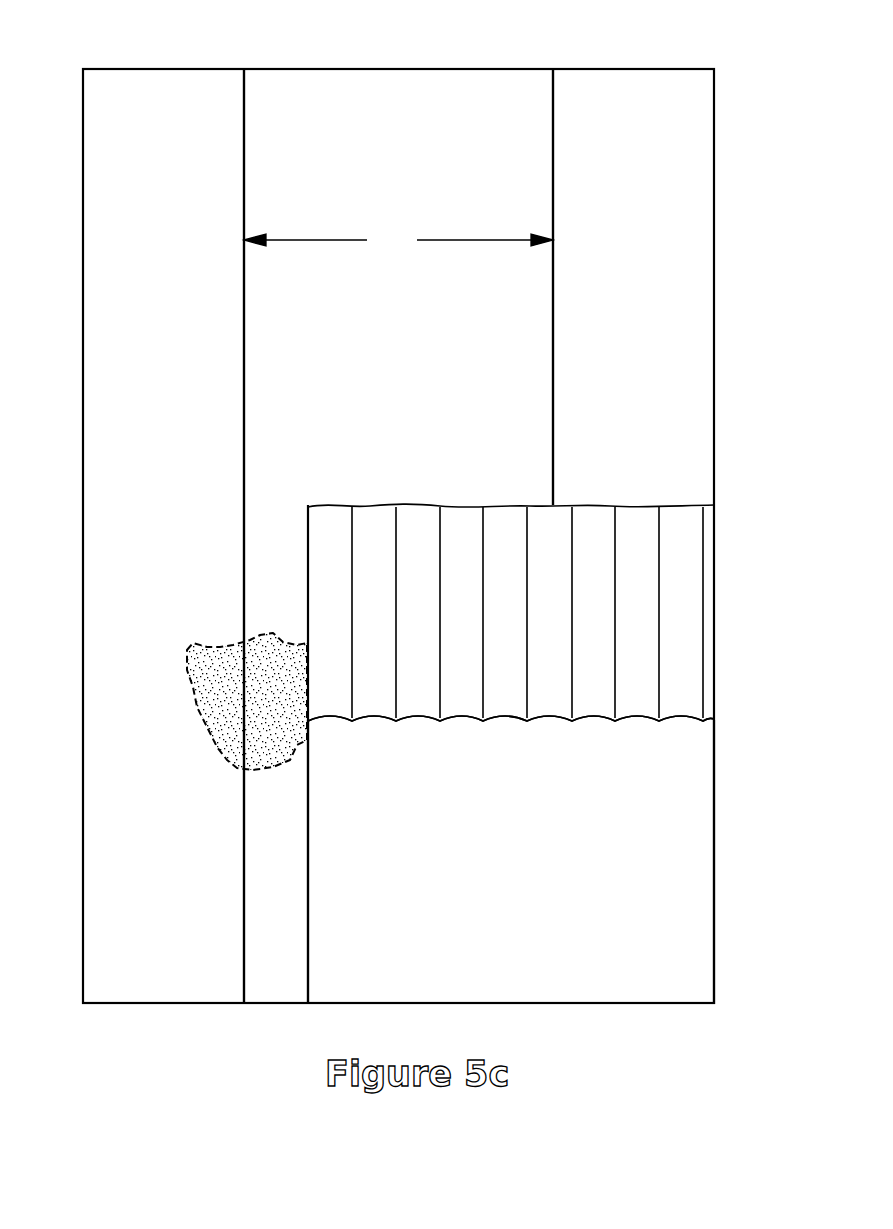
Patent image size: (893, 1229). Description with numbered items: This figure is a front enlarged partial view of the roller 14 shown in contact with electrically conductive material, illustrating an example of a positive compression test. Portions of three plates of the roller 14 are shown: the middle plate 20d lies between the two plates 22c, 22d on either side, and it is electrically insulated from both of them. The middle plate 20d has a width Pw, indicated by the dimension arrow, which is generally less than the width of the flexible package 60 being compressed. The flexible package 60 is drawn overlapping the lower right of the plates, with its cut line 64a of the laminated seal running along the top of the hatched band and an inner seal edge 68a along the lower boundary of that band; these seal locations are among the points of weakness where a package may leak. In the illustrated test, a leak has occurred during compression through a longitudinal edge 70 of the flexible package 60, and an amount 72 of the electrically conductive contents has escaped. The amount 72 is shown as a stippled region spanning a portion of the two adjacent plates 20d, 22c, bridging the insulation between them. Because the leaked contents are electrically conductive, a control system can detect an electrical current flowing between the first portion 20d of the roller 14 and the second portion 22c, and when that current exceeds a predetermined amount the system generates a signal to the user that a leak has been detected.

The roller 14 is at (722, 239).
The plate 22c is at (173, 69).
The plate 22d is at (597, 69).
The middle plate 20d is at (433, 69).
The cut line 64a is at (640, 505).
The flexible package 60 is at (714, 822).
The longitudinal edge 70 is at (308, 920).
The inner seal edge 68a is at (470, 725).
The amount of leaked electrically conductive contents 72 is at (226, 643).